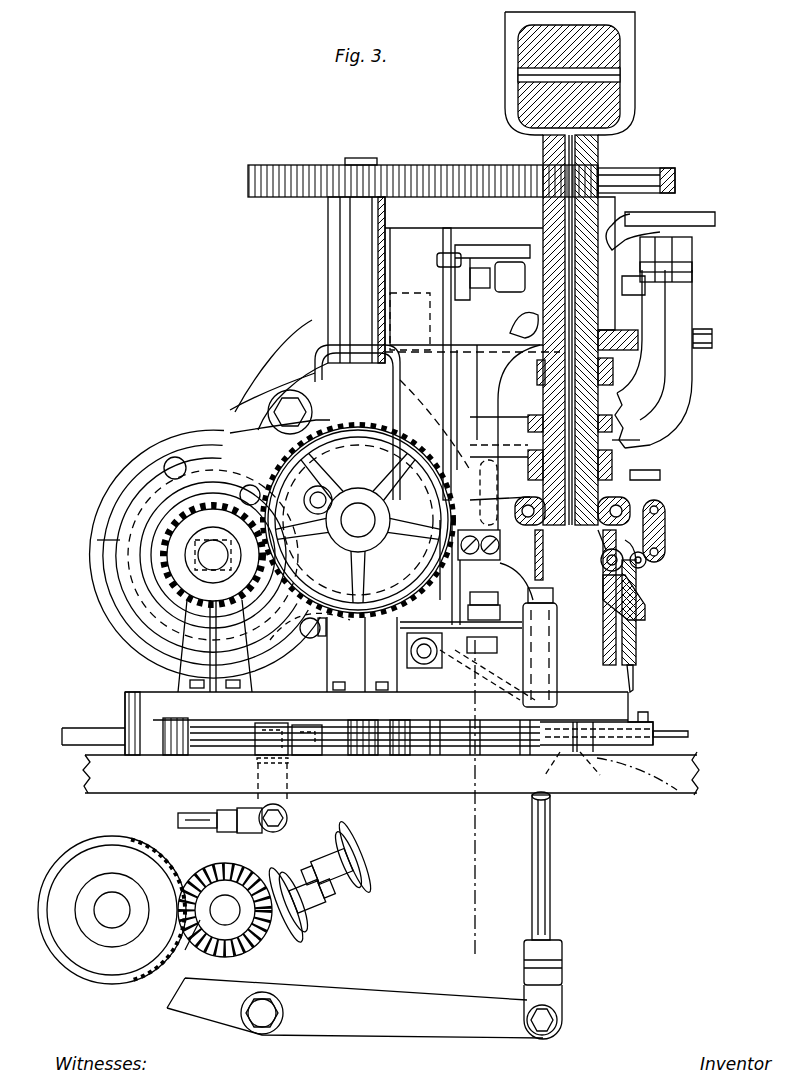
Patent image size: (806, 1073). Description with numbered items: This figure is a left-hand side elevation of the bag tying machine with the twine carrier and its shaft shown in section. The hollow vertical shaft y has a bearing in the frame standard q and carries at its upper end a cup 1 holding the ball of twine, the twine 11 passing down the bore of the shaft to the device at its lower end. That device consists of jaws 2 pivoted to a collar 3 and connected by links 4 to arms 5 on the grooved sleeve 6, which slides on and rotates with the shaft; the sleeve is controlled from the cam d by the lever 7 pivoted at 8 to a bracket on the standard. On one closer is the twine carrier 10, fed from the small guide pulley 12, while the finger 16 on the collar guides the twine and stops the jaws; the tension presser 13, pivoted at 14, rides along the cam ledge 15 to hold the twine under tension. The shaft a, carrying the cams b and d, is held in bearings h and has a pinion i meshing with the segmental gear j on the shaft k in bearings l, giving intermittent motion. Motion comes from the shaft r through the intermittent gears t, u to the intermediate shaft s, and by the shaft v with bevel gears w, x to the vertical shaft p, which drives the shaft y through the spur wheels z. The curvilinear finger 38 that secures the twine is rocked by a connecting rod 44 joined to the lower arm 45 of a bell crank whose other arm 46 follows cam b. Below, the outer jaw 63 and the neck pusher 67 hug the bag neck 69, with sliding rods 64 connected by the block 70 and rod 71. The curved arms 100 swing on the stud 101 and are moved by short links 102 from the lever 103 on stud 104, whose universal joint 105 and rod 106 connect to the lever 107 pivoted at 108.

The cup 1 is at (636, 70).
The jaws 2 is at (575, 597).
The collar 3 is at (614, 497).
The links 4 is at (665, 503).
The arms 5 is at (660, 462).
The grooved sleeve 6 is at (620, 437).
The lever 7 is at (245, 420).
The pivot 8 is at (278, 400).
The twine carrier 10 is at (636, 650).
The twine 11 is at (633, 680).
The guide pulley 12 is at (640, 548).
The tension presser 13 is at (645, 606).
The pivot 14 is at (646, 562).
The cam ledge 15 is at (580, 610).
The finger 16 is at (600, 552).
The curvilinear finger 38 is at (656, 700).
The connecting rod 44 is at (443, 643).
The lower arm 45 is at (300, 650).
The arm 46 is at (225, 470).
The outer jaw 63 is at (655, 724).
The sliding rods 64 is at (70, 745).
The neck pusher 67 is at (690, 735).
The bag neck 69 is at (580, 750).
The block 70 is at (287, 815).
The rod 71 is at (178, 820).
The curved arms 100 is at (692, 306).
The stud 101 is at (713, 338).
The short links 102 is at (692, 250).
The lever 103 is at (705, 212).
The stud 104 is at (452, 255).
The universal joint 105 is at (504, 303).
The rod 106 is at (548, 898).
The lever 107 is at (430, 1038).
The pivot 108 is at (265, 1035).
The shaft a is at (200, 568).
The cam b is at (97, 540).
The cam d is at (135, 460).
The bearings h is at (190, 650).
The pinion i is at (198, 558).
The segmental gear j is at (312, 640).
The shaft k is at (358, 559).
The bearings l is at (325, 640).
The vertical shaft p is at (352, 160).
The frame standard q is at (444, 333).
The shaft r is at (112, 910).
The intermediate shaft s is at (225, 910).
The intermittent gear t is at (148, 978).
The intermittent gear u is at (208, 935).
The shaft v is at (322, 880).
The bevel gear w is at (278, 925).
The bevel gear x is at (366, 832).
The hollow vertical shaft y is at (598, 278).
The spur wheels z is at (478, 166).